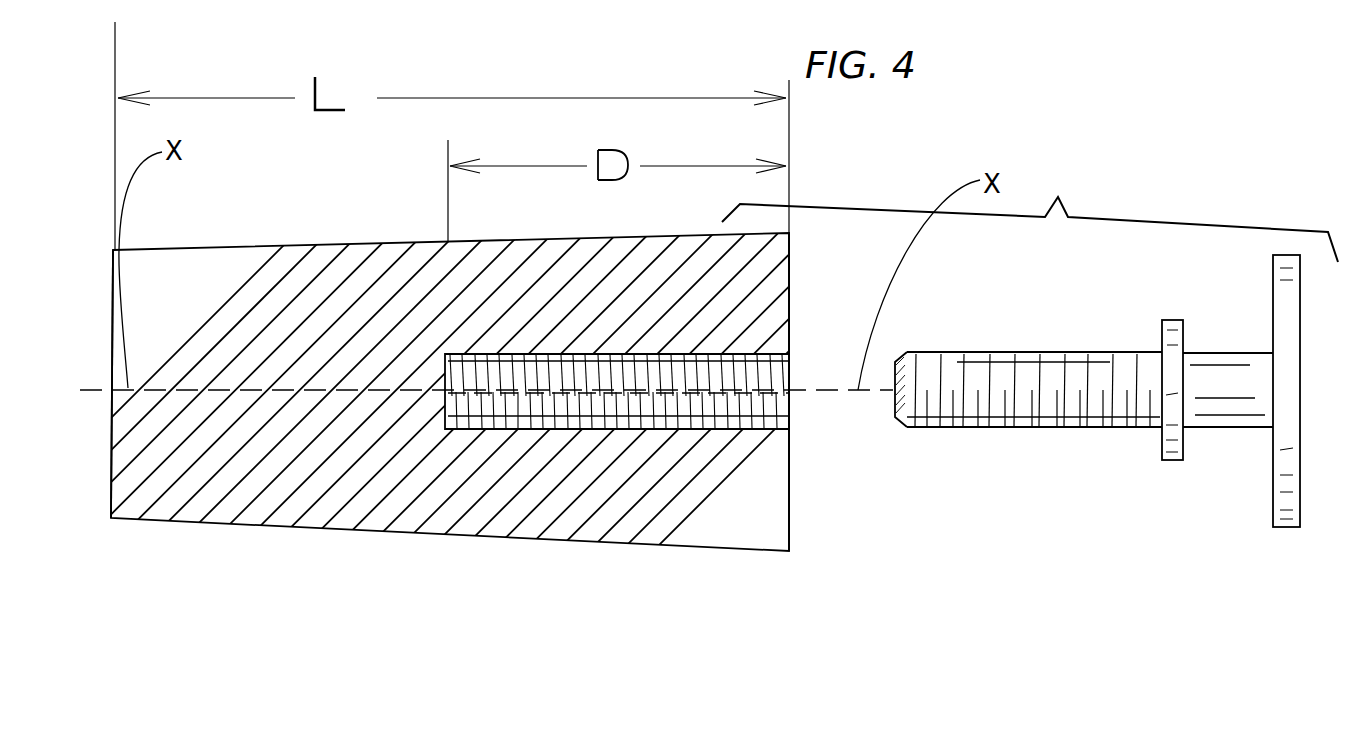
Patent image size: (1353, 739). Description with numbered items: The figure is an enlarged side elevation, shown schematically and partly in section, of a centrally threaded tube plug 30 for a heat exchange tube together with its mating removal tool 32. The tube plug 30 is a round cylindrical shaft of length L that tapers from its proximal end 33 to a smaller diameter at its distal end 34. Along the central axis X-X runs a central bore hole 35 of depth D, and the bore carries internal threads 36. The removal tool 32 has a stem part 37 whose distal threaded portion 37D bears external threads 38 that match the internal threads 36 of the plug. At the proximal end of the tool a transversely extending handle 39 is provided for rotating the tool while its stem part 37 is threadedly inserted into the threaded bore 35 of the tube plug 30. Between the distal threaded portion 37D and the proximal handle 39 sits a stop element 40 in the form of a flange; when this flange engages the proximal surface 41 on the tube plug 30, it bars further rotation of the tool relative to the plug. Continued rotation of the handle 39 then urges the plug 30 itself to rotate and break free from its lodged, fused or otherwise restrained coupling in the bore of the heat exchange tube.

The tube plug 30 is at (195, 505).
The removal tool 32 is at (1117, 508).
The proximal end 33 is at (578, 513).
The distal end 34 is at (112, 510).
The central bore hole 35 is at (473, 430).
The internal threads 36 is at (540, 430).
The stem part 37 is at (1238, 428).
The distal threaded portion 37D is at (1048, 427).
The external threads 38 is at (948, 427).
The handle 39 is at (1285, 527).
The stop element 40 is at (1170, 320).
The proximal surface 41 is at (789, 530).